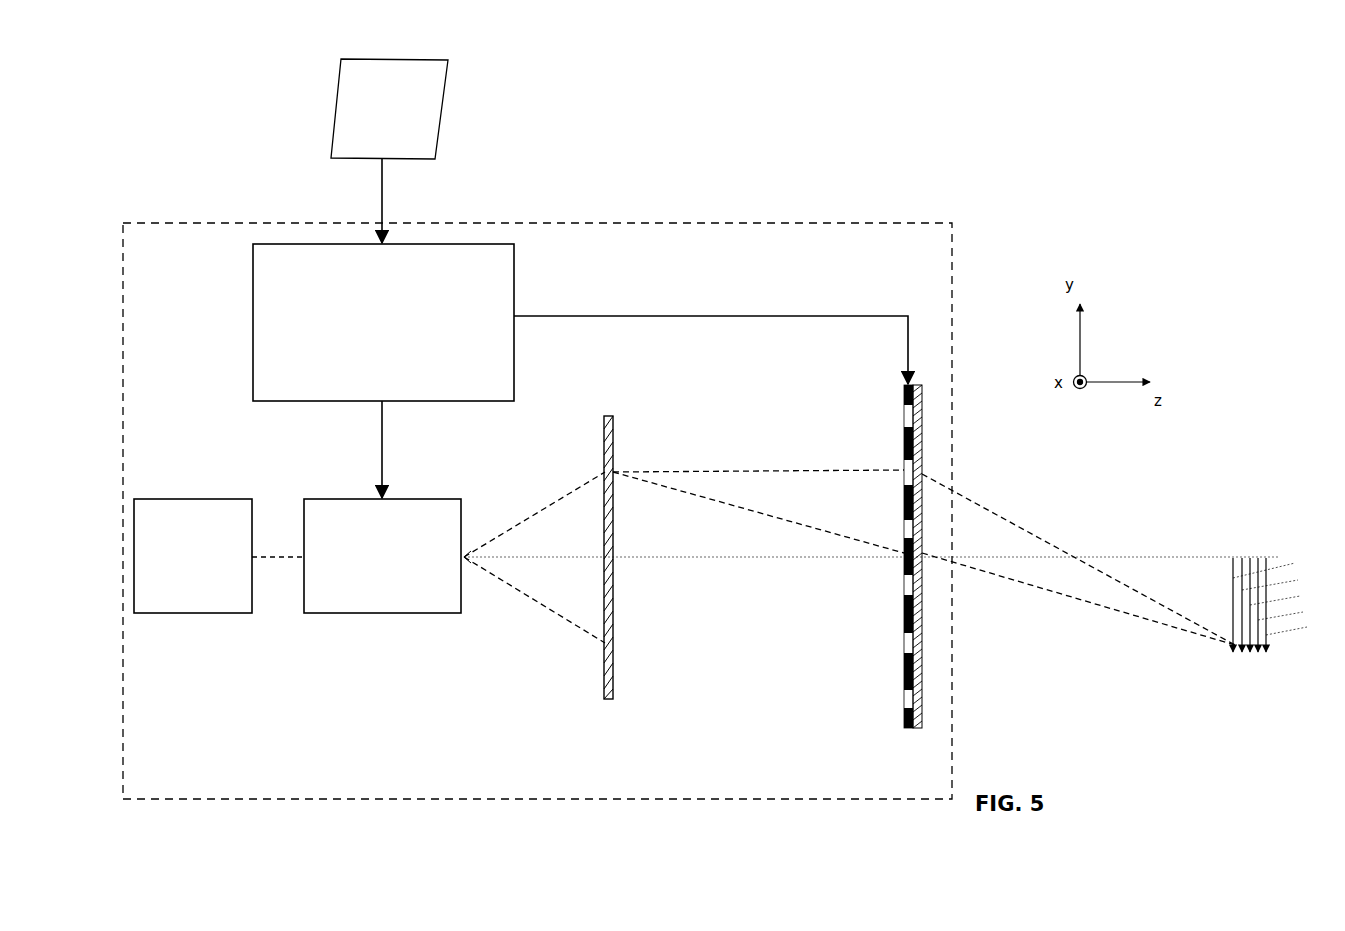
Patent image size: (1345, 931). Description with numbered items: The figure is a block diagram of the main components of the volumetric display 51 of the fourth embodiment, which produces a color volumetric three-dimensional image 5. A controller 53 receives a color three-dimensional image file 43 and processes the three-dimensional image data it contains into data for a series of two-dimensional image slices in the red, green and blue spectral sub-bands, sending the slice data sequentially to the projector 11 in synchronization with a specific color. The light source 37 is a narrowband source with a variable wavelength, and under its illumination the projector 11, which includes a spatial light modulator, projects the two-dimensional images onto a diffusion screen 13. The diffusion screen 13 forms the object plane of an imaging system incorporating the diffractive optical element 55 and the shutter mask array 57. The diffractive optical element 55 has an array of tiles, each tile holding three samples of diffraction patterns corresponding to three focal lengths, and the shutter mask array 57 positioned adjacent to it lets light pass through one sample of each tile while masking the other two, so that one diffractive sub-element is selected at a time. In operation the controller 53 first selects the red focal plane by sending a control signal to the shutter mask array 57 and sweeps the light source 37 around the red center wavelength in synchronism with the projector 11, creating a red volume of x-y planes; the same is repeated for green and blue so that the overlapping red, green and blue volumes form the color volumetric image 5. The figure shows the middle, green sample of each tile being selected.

The volumetric three-dimensional image 5 is at (1186, 516).
The projector 11 is at (392, 615).
The diffusion screen 13 is at (613, 640).
The light source 37 is at (192, 615).
The color 3D image file 43 is at (443, 110).
The volumetric display 51 is at (537, 223).
The controller 53 is at (516, 392).
The diffractive optical element 55 is at (918, 660).
The shutter mask array 57 is at (905, 660).